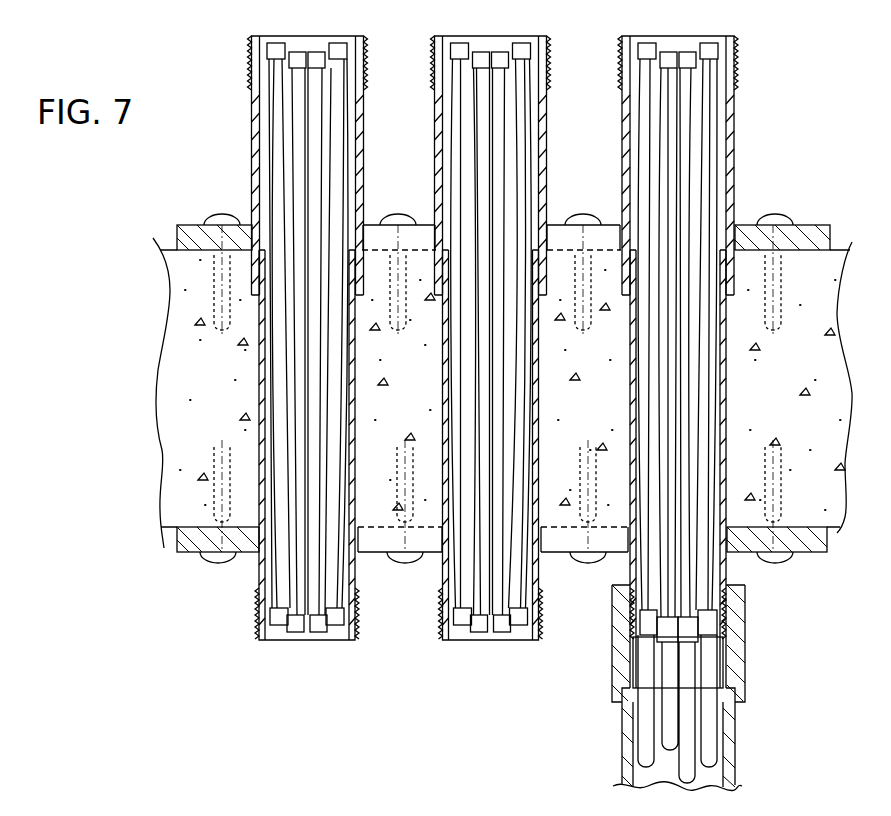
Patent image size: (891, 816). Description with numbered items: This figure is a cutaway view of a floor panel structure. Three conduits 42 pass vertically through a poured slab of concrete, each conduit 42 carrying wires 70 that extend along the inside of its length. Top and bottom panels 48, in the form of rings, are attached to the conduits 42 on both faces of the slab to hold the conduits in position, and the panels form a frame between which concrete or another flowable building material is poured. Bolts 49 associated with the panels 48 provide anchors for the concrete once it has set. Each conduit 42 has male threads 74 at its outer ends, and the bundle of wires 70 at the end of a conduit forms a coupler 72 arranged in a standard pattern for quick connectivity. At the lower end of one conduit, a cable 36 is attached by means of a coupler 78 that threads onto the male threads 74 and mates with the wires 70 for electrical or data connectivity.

The cable 36 is at (736, 752).
The conduit 42 is at (252, 138).
The panel 48 is at (195, 224).
The bolt 49 is at (222, 214).
The wires 70 is at (693, 596).
The coupler 72 is at (368, 97).
The male threads 74 is at (250, 48).
The coupler 78 is at (747, 612).